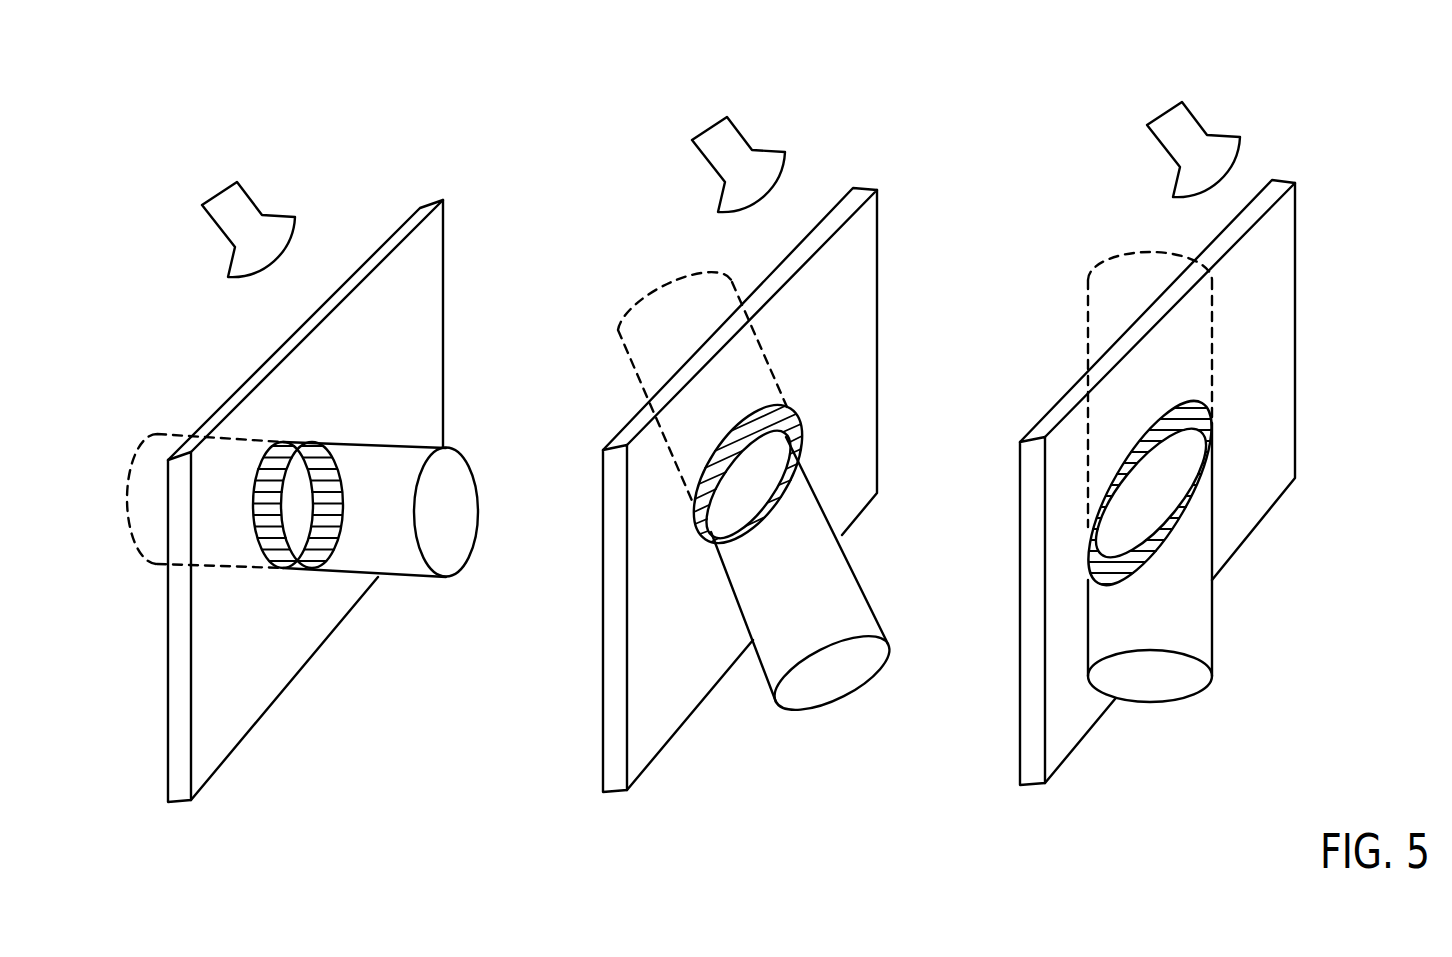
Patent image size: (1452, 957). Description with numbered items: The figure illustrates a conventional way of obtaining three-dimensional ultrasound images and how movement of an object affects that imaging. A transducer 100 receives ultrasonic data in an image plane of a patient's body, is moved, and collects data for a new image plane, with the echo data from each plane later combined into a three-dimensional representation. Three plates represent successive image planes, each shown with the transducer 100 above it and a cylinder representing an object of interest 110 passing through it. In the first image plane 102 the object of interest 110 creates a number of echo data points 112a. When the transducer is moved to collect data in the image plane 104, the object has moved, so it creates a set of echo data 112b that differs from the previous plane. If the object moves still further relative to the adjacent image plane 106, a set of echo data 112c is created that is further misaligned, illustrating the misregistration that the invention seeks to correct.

The transducer 100 is at (262, 209).
The image plane 102 is at (446, 210).
The image plane 104 is at (868, 188).
The image plane 106 is at (1297, 196).
The object of interest 110 is at (428, 578).
The echo data points 112a is at (283, 570).
The echo data 112b is at (700, 523).
The echo data 112c is at (1197, 500).